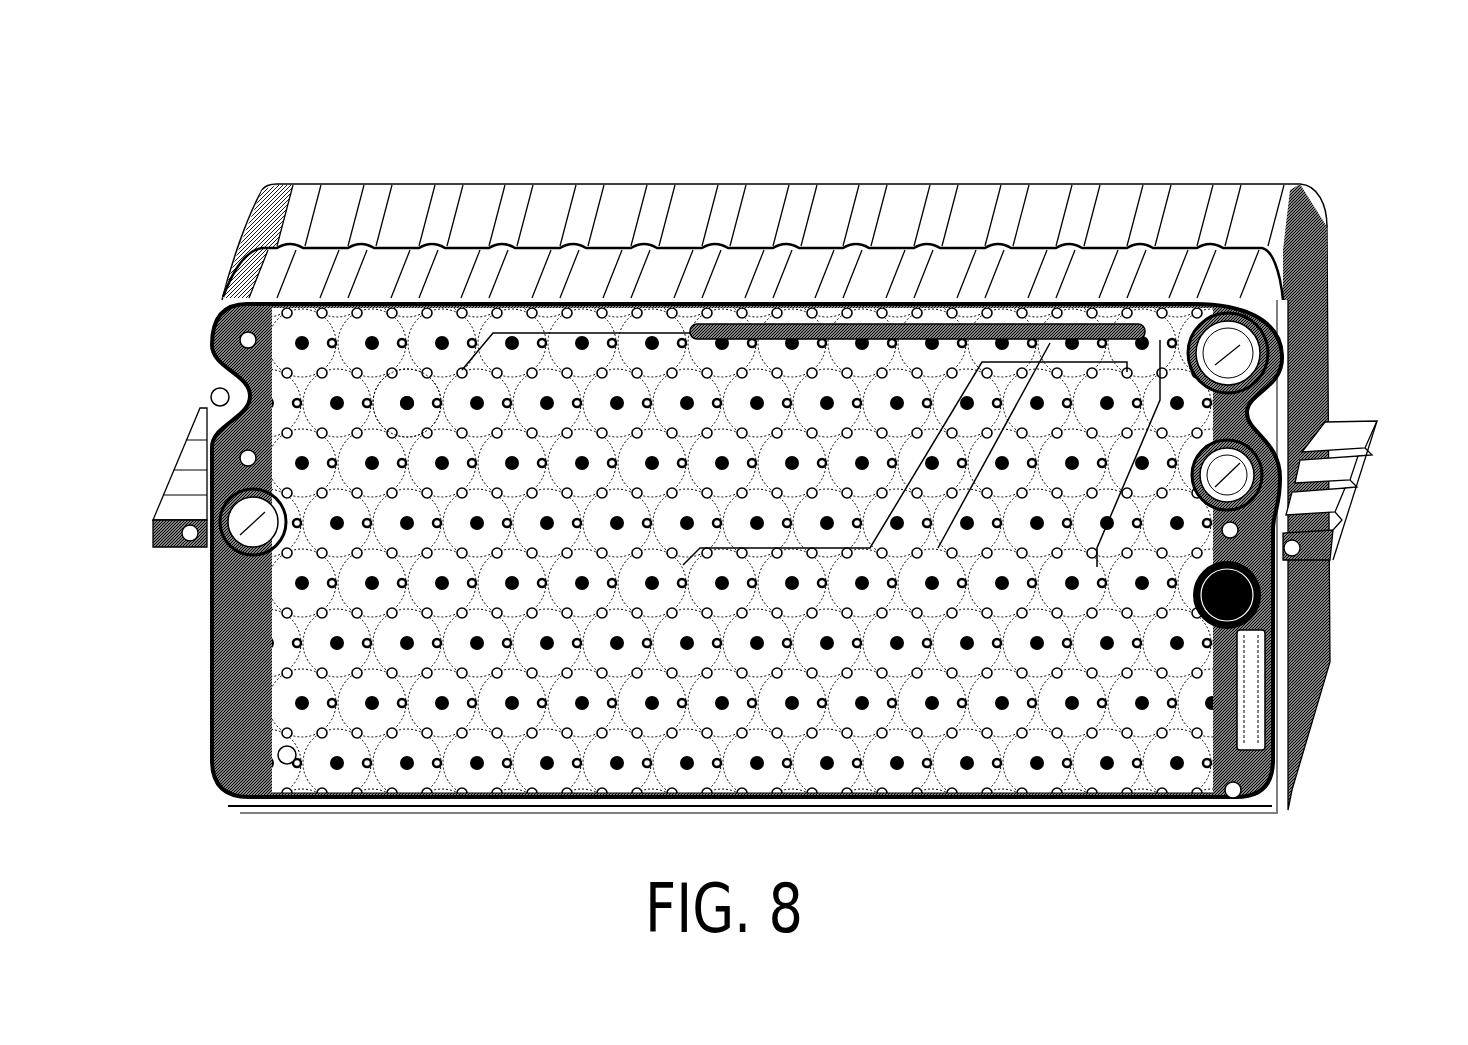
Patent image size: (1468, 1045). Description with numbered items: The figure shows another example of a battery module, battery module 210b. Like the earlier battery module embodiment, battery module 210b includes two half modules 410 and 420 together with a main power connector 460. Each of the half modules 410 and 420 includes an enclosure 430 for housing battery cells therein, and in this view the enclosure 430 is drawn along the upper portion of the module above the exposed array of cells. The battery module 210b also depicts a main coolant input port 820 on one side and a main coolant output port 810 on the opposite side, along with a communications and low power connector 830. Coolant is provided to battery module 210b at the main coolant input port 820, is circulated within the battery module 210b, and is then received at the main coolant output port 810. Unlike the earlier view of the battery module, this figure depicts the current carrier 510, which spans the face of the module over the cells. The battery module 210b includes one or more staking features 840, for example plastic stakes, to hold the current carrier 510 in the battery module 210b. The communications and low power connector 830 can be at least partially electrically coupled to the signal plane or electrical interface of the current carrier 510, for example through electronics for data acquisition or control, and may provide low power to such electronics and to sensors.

The battery module 210b is at (297, 88).
The staking feature 840 is at (410, 398).
The enclosure 430 is at (1300, 227).
The main coolant output port 810 is at (1236, 355).
The main power connector 460 is at (1220, 483).
The communications and low power connector 830 is at (1250, 602).
The half module 420 is at (1343, 675).
The half module 410 is at (1313, 745).
The main coolant input port 820 is at (252, 523).
The current carrier 510 is at (413, 773).